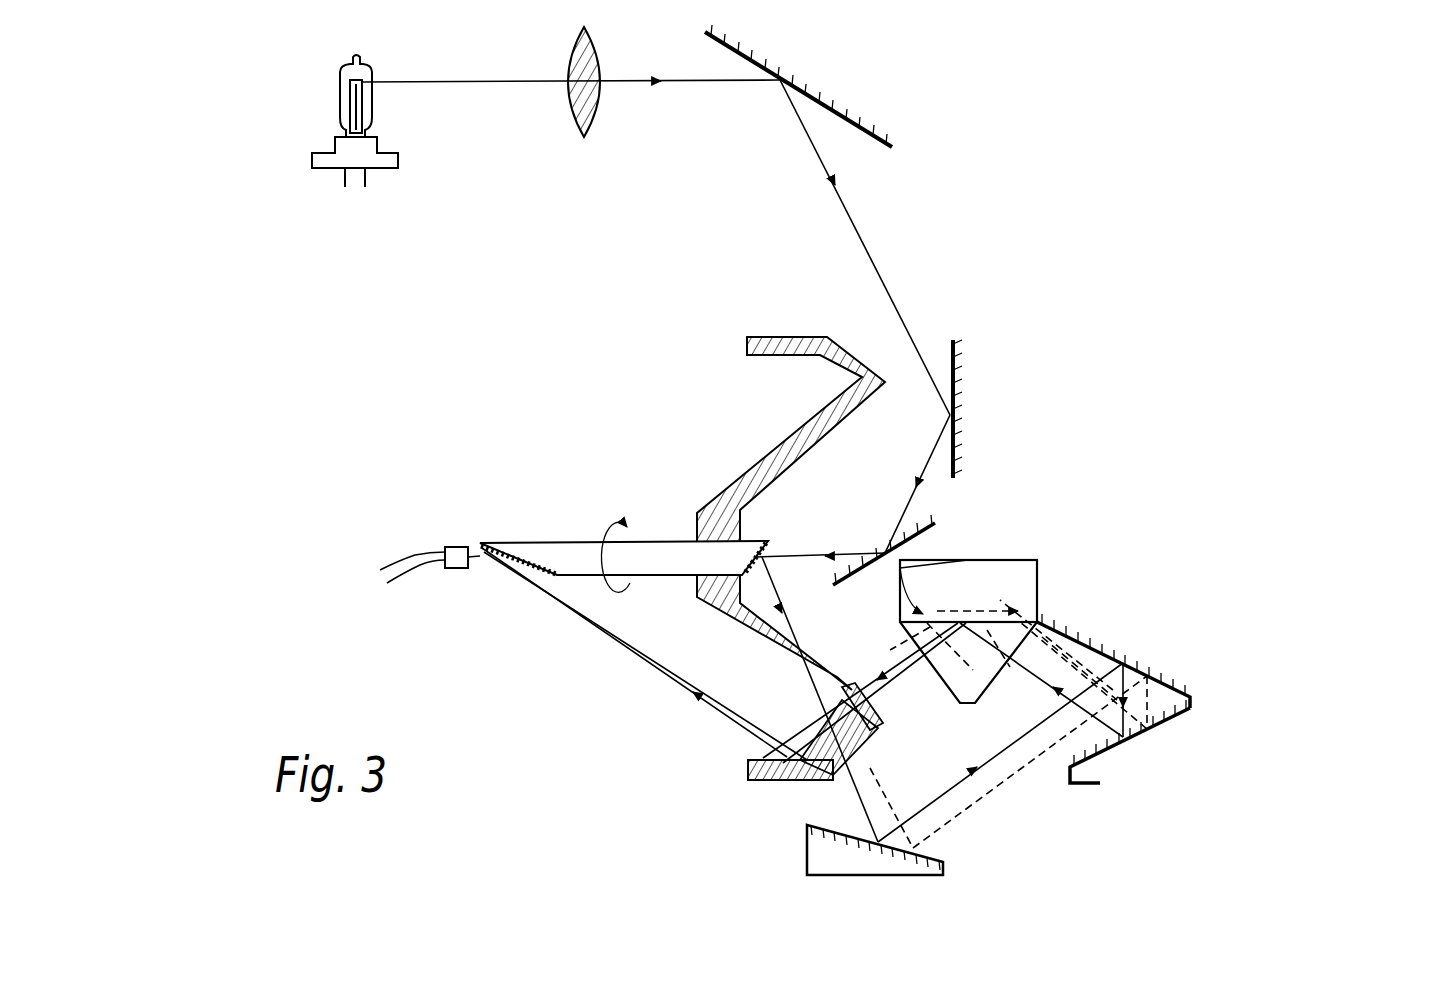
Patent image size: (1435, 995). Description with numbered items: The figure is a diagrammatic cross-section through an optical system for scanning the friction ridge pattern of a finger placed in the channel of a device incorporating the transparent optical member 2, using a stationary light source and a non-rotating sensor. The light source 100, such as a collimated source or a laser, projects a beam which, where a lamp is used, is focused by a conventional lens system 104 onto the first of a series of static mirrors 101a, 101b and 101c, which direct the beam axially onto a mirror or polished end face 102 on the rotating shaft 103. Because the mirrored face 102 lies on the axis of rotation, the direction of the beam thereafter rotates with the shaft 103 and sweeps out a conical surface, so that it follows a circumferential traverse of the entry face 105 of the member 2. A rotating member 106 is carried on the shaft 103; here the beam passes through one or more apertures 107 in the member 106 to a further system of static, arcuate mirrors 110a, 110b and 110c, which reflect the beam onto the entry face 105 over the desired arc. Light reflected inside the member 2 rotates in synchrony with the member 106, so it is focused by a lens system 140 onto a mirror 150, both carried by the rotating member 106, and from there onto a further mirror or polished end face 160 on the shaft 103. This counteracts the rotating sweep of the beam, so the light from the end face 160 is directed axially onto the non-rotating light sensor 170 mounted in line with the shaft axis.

The light source 100 is at (340, 103).
The lens system 104 is at (580, 107).
The first static mirror 101a is at (832, 100).
The second static mirror 101b is at (957, 372).
The third static mirror 101c is at (917, 528).
The rotating member 106 is at (770, 465).
The rotating shaft 103 is at (648, 545).
The mirror or polished end face 160 is at (540, 555).
The mirror or polished end face 102 is at (768, 548).
The light sensor 170 is at (450, 548).
The member 2 is at (1030, 590).
The entry face 105 is at (993, 690).
The static mirror 110a is at (805, 848).
The static mirror 110b is at (1100, 748).
The static mirror 110c is at (1172, 680).
The aperture 107 is at (803, 658).
The lens system 140 is at (877, 718).
The mirror 150 is at (748, 770).